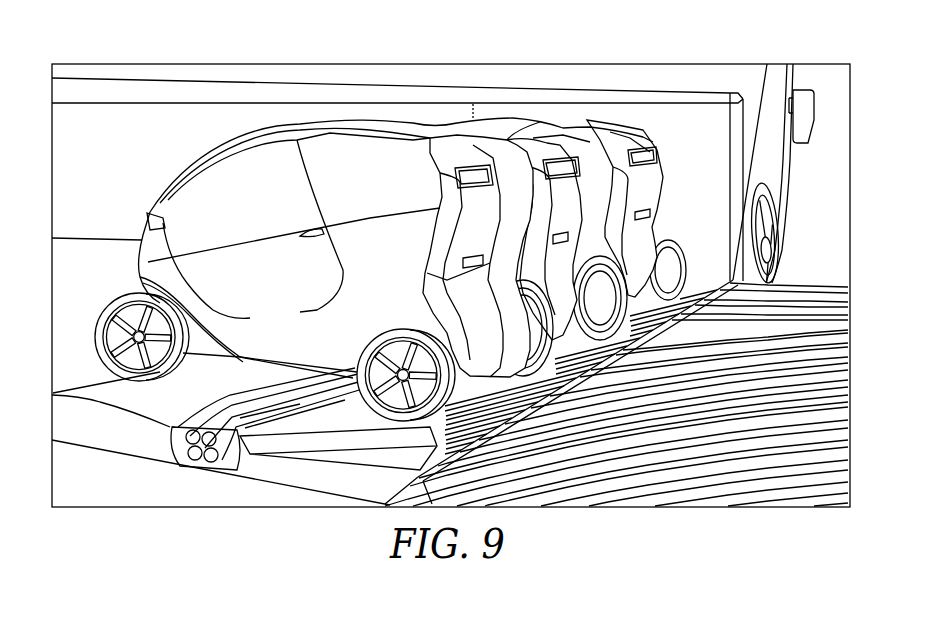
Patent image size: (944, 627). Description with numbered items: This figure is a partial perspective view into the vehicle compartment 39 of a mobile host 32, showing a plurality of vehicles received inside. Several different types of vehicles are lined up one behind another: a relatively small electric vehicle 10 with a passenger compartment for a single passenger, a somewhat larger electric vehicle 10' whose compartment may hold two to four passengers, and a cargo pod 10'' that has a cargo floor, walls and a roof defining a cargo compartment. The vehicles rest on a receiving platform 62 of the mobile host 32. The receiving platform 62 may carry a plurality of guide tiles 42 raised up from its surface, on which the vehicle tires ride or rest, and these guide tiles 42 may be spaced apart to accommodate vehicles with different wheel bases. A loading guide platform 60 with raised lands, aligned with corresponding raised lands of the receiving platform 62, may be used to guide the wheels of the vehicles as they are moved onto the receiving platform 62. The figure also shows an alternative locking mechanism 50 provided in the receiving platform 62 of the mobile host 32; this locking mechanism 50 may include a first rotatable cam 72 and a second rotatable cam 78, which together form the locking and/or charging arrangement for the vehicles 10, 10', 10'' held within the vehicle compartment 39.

The vehicle compartment 39 is at (143, 143).
The vehicle 10 is at (374, 269).
The vehicle 10' is at (503, 185).
The cargo pod 10'' is at (603, 165).
The mobile host 32 is at (727, 80).
The first rotatable cam 72 is at (175, 443).
The locking mechanism 50 is at (198, 463).
The second rotatable cam 78 is at (238, 450).
The guide tile 42 is at (340, 402).
The receiving platform 62 is at (377, 452).
The loading guide platform 60 is at (617, 483).